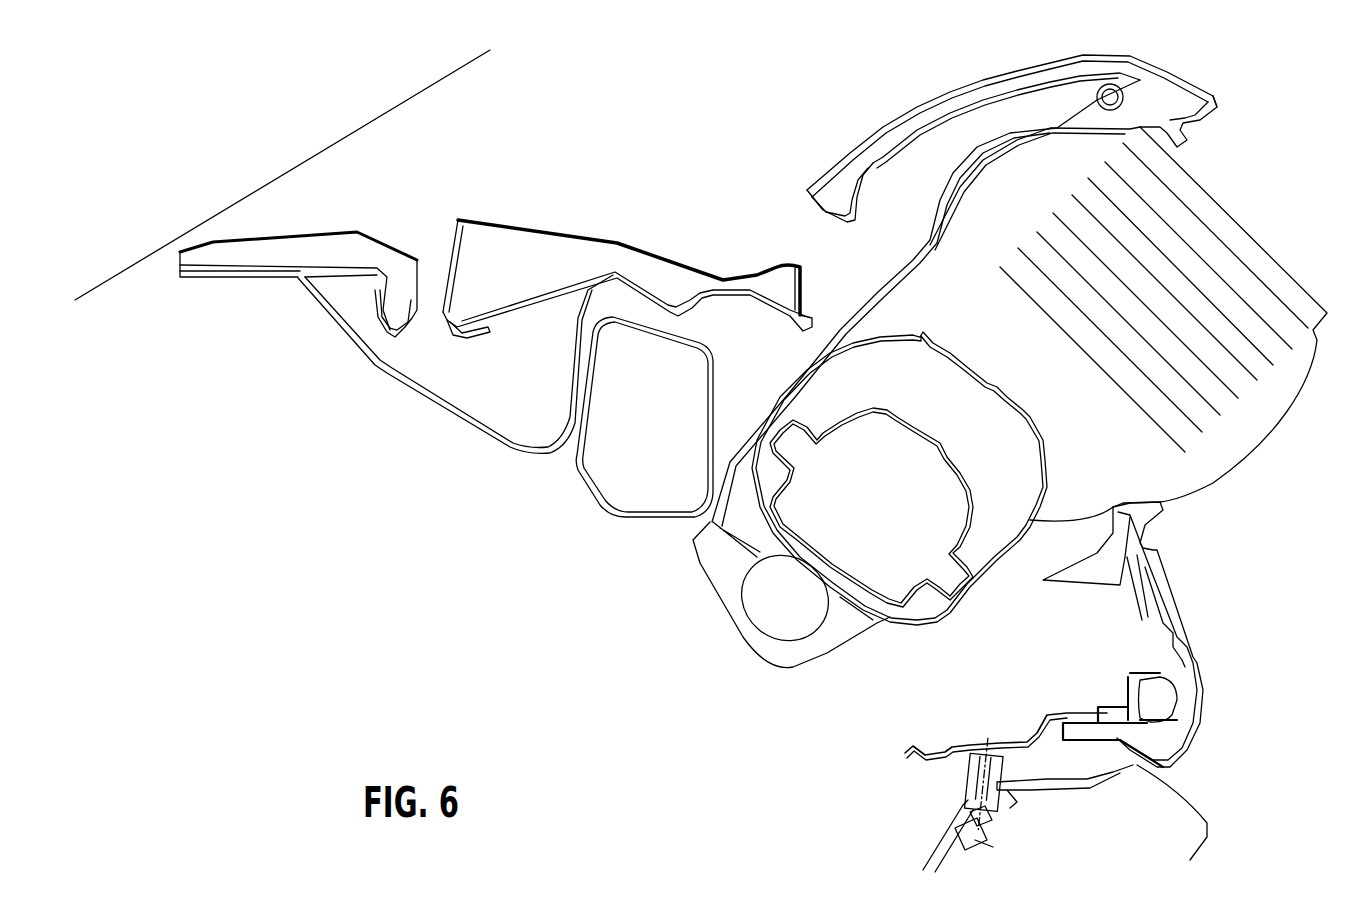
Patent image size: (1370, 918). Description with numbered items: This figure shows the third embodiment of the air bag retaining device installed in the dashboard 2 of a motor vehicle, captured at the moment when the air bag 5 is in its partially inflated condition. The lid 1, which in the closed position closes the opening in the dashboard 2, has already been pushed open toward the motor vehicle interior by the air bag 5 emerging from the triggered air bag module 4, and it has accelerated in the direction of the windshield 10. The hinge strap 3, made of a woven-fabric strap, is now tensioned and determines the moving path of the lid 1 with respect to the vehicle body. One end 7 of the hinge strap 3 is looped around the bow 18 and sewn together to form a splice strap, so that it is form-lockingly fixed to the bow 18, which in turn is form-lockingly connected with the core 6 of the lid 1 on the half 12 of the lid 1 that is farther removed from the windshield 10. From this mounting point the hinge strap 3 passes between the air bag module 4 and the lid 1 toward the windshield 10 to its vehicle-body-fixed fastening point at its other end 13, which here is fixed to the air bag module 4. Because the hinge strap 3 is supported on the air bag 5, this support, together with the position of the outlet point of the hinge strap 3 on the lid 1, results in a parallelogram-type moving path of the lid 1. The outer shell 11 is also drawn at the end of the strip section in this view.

The lid 1 is at (1170, 90).
The dashboard 2 is at (1143, 527).
The hinge strap 3 is at (877, 292).
The air bag module 4 is at (925, 630).
The air bag 5 is at (1280, 405).
The core 6 is at (1003, 98).
The end of the hinge strap 7 is at (1128, 100).
The windshield 10 is at (413, 97).
The outer shell 11 is at (847, 143).
The half of the lid 12 is at (1215, 92).
The other end of the hinge strap 13 is at (713, 520).
The bow 18 is at (1112, 84).